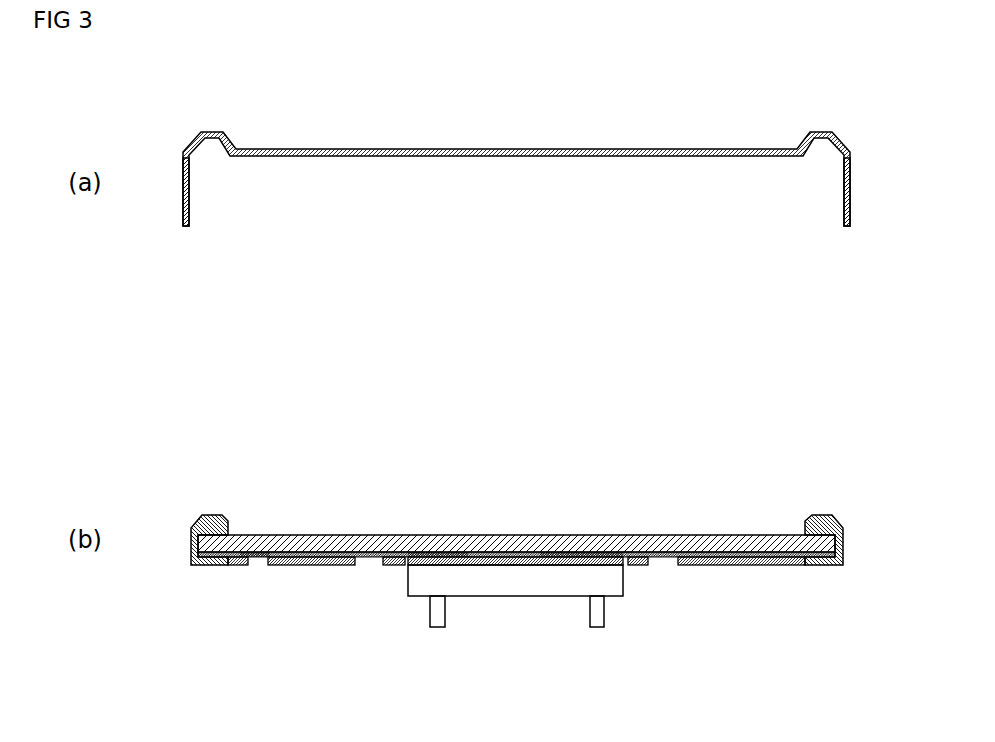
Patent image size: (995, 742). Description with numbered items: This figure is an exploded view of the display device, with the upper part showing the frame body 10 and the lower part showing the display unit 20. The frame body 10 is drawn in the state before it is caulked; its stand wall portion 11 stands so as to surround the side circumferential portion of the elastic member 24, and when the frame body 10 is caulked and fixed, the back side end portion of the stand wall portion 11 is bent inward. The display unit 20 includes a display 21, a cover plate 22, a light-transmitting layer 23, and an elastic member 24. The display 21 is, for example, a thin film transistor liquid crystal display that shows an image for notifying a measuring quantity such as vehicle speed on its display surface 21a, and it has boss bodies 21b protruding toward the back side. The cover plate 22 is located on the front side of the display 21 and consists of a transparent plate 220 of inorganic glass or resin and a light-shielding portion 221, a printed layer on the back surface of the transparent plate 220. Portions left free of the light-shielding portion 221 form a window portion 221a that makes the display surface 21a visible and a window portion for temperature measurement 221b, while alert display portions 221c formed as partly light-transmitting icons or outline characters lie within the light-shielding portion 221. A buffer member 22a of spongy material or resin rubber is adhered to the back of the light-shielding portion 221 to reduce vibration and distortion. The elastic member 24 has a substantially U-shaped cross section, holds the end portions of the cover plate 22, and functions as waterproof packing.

The frame body 10 is at (818, 131).
The stand wall portion 11 is at (190, 207).
The display unit 20 is at (756, 454).
The display 21 is at (518, 581).
The display surface 21a is at (502, 562).
The boss bodies 21b is at (438, 608).
The cover plate 22 is at (339, 523).
The buffer member 22a is at (233, 564).
The transparent plate 220 is at (400, 548).
The light-shielding portion 221 is at (268, 558).
The window portion 221a is at (440, 555).
The window portion for temperature measurement 221b is at (257, 535).
The alert display portion 221c is at (373, 524).
The light-transmitting layer 23 is at (582, 553).
The elastic member 24 is at (200, 517).